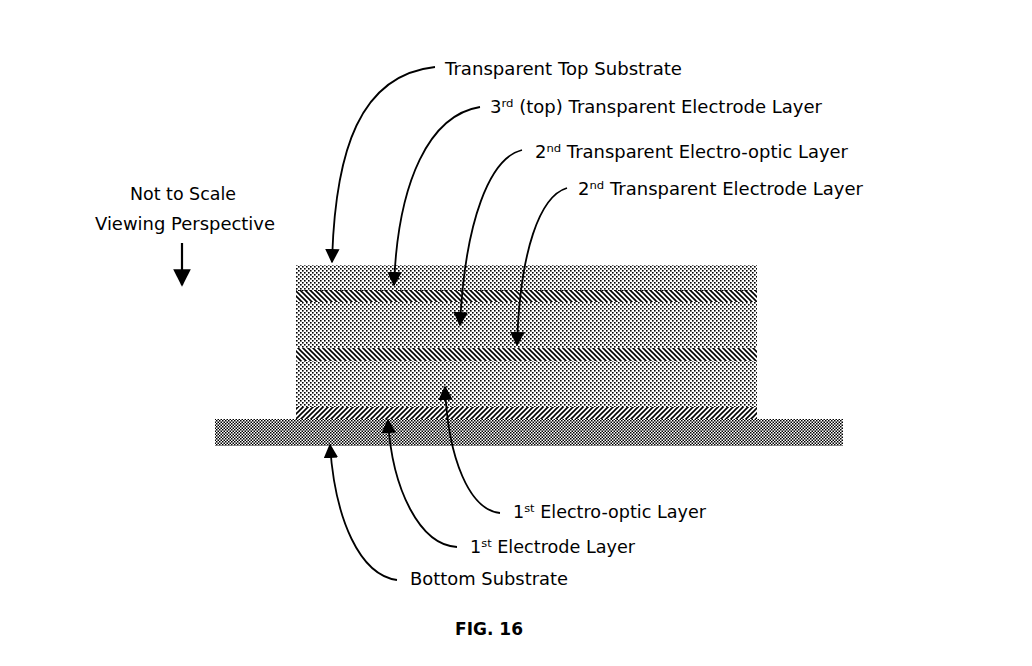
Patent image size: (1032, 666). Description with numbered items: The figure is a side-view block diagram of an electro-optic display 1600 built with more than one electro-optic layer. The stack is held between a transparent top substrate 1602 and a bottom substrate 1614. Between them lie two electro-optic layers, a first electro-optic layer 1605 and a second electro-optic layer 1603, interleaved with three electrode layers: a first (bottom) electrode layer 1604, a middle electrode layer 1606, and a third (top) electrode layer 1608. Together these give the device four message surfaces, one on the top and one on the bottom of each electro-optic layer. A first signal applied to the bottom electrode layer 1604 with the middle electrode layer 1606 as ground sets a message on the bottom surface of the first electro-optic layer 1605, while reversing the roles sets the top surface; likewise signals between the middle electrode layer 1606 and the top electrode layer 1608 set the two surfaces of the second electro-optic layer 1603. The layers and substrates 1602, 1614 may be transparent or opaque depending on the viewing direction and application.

The electro-optic display 1600 is at (212, 30).
The substrate 1602 is at (748, 275).
The second electro-optic layer 1603 is at (742, 320).
The first (bottom) electrode layer 1604 is at (300, 413).
The first electro-optic layer 1605 is at (748, 383).
The middle electrode layer 1606 is at (300, 355).
The third (top) electrode layer 1608 is at (300, 296).
The substrate 1614 is at (735, 437).